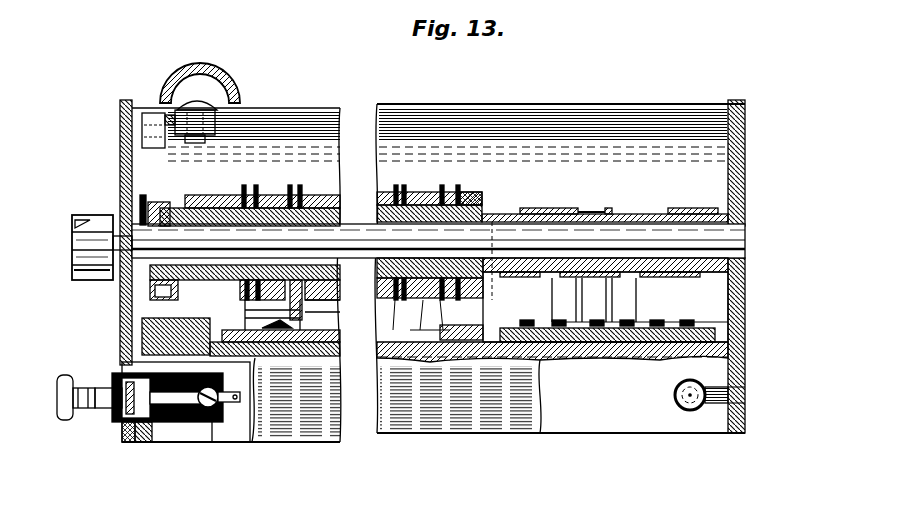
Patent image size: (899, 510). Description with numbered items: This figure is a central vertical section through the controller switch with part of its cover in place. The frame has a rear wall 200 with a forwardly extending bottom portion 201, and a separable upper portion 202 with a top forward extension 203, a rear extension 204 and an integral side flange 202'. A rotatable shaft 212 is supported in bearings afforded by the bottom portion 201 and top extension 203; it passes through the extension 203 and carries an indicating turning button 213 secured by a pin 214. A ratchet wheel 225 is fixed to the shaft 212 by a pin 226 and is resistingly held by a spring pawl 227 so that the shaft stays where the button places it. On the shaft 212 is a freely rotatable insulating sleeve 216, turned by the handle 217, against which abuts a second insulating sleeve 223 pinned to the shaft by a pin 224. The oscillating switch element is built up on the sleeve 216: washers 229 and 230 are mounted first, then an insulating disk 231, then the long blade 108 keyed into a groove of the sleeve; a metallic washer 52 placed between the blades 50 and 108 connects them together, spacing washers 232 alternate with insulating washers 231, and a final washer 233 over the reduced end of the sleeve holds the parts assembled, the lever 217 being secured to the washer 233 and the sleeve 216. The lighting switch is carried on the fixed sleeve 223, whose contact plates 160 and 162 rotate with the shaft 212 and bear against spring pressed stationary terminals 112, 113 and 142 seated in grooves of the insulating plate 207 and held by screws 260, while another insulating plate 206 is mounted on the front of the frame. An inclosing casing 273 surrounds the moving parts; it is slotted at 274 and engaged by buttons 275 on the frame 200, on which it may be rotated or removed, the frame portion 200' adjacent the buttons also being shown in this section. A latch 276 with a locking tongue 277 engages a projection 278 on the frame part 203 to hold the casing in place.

The top forward extension 203 is at (120, 160).
The bottom portion 201 is at (745, 167).
The rotatable shaft 212 is at (745, 230).
The indicating turning button 213 is at (72, 242).
The pin 214 is at (72, 278).
The ratchet wheel 225 is at (155, 202).
The handle 217 is at (188, 196).
The washer 233 is at (205, 196).
The spacing washer 232 is at (300, 186).
The washer 230 is at (474, 196).
The metallic washer 52 is at (446, 190).
The switch blade 50 is at (455, 192).
The insulating disk 231 is at (462, 192).
The washer 229 is at (462, 197).
The insulating sleeve 216 is at (488, 218).
The pin 224 is at (538, 214).
The contact plate 160 is at (578, 212).
The insulating sleeve 223 is at (603, 213).
The contact plate 162 is at (685, 208).
The long blade 108 is at (470, 282).
The switch terminal 112 is at (556, 300).
The switch terminal 113 is at (625, 305).
The switch terminal 142 is at (640, 316).
The screws 260 is at (690, 322).
The insulating plate 207 is at (535, 435).
The insulating plate 206 is at (455, 435).
The inclosing casing 273 is at (653, 437).
The buttons 275 is at (705, 386).
The slot 274 is at (745, 408).
The base extension 200' is at (760, 388).
The pin 226 is at (168, 286).
The spring pawl 227 is at (122, 322).
The rear wall 200 is at (314, 400).
The upper portion 202 is at (135, 402).
The rear extension 204 is at (145, 443).
The side flange 202' is at (167, 463).
The latch 276 is at (190, 64).
The locking tongue 277 is at (165, 110).
The projection 278 is at (150, 113).